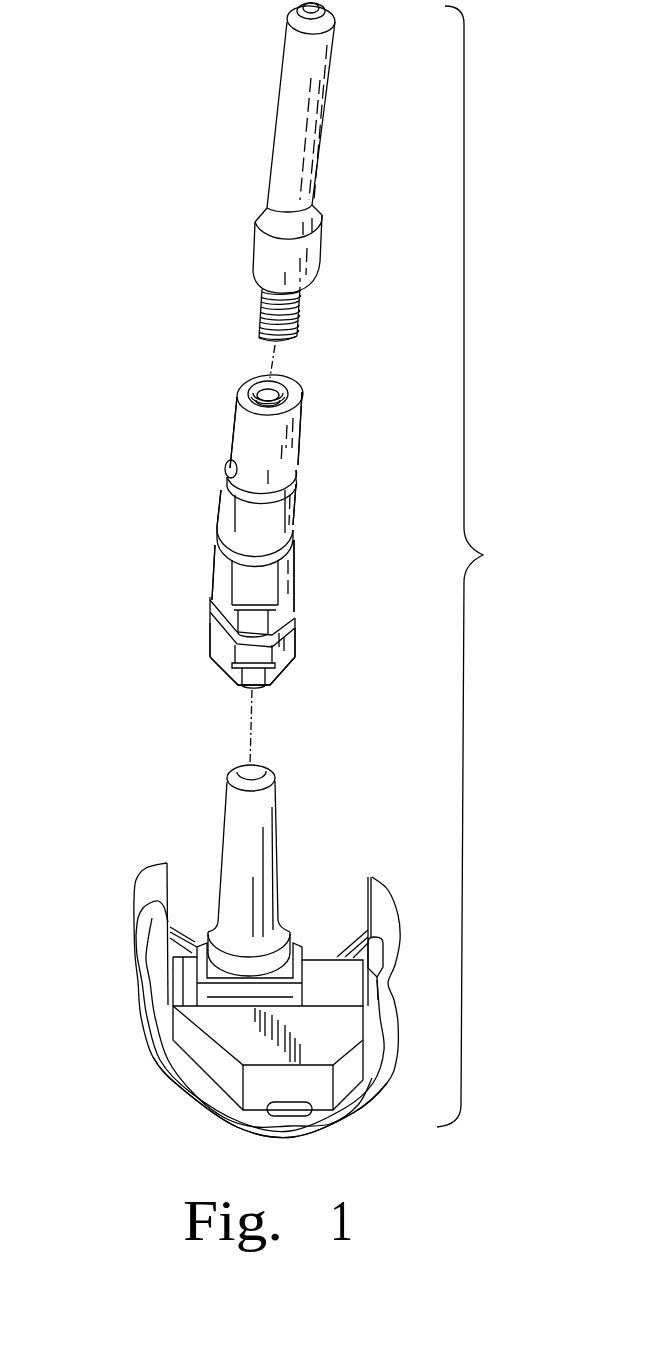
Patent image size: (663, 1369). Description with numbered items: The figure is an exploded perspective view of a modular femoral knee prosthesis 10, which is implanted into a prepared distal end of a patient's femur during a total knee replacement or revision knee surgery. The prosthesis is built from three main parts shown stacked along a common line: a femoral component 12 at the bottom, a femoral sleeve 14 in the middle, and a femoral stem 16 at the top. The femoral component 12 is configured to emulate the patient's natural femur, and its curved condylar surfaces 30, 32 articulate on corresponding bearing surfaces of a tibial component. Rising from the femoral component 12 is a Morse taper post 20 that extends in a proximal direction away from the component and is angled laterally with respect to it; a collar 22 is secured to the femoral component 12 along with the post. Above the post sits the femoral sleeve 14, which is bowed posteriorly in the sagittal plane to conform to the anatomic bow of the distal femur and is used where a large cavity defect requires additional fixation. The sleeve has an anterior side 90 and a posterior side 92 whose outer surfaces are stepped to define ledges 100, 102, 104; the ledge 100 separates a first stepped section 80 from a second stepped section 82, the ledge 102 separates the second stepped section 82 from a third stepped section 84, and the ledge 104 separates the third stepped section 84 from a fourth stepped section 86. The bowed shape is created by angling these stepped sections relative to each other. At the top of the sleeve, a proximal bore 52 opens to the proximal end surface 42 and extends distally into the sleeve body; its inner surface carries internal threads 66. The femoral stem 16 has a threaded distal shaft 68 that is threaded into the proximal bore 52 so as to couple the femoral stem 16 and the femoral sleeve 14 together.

The modular femoral knee prosthesis 10 is at (480, 566).
The femoral component 12 is at (178, 1079).
The femoral sleeve 14 is at (188, 519).
The femoral stem 16 is at (204, 132).
The Morse taper post 20 is at (268, 805).
The collar 22 is at (196, 963).
The condylar surface 30 is at (360, 1112).
The condylar surface 32 is at (388, 962).
The proximal end surface 42 is at (303, 400).
The proximal bore 52 is at (257, 385).
The internal threads 66 is at (276, 385).
The threaded distal shaft 68 is at (300, 322).
The first stepped section 80 is at (282, 660).
The second stepped section 82 is at (282, 587).
The third stepped section 84 is at (290, 516).
The fourth stepped section 86 is at (289, 432).
The anterior side 90 is at (194, 472).
The posterior side 92 is at (325, 479).
The ledge 100 is at (212, 604).
The ledge 102 is at (300, 547).
The ledge 104 is at (228, 460).